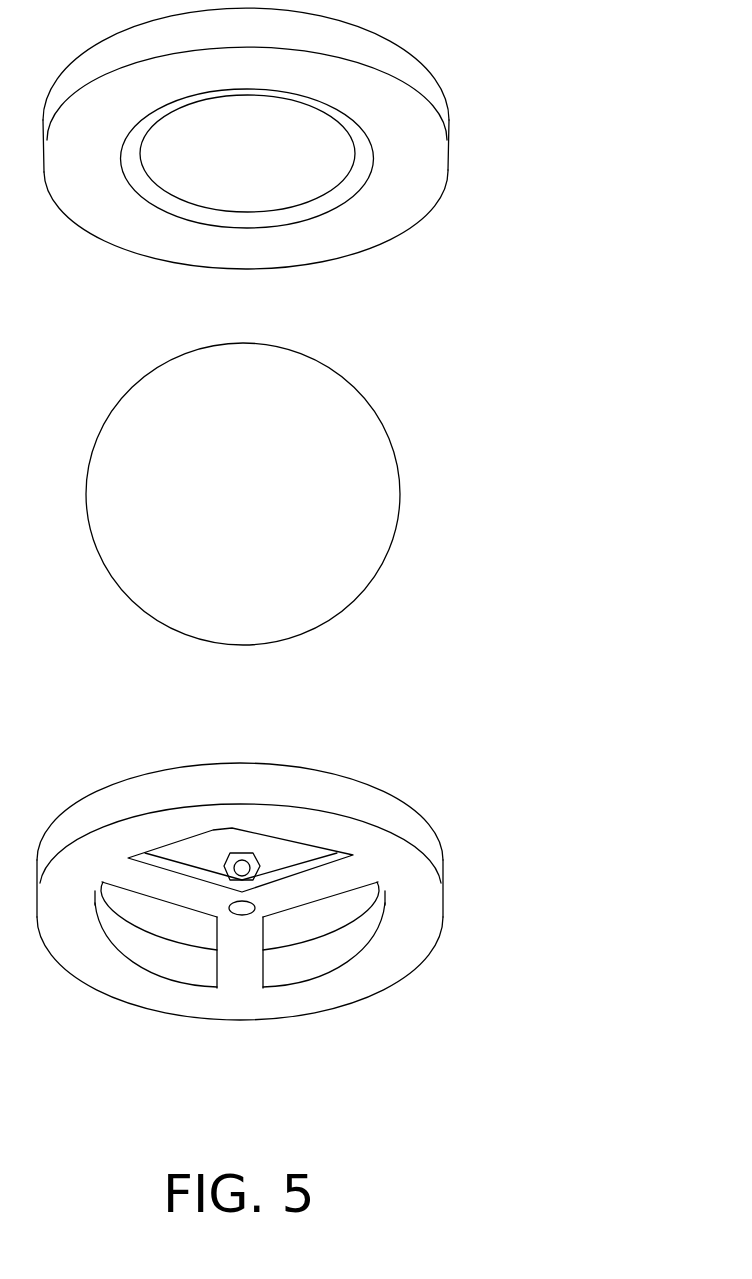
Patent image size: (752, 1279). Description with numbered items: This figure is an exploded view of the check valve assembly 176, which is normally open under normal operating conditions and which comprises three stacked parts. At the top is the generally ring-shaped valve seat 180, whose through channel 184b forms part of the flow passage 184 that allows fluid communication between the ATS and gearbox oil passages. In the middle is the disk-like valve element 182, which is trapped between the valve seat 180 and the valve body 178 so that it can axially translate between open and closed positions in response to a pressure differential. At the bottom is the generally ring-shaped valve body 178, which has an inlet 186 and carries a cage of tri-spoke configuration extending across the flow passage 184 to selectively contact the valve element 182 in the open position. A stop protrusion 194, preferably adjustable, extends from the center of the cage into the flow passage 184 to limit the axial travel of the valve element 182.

The valve seat 180 is at (340, 165).
The through channel 184b is at (200, 177).
The check valve assembly 176 is at (358, 467).
The valve element 182 is at (275, 508).
The valve body 178 is at (342, 892).
The stop protrusion 194 is at (239, 862).
The inlet 186 is at (246, 978).
The flow passage 184 is at (303, 930).